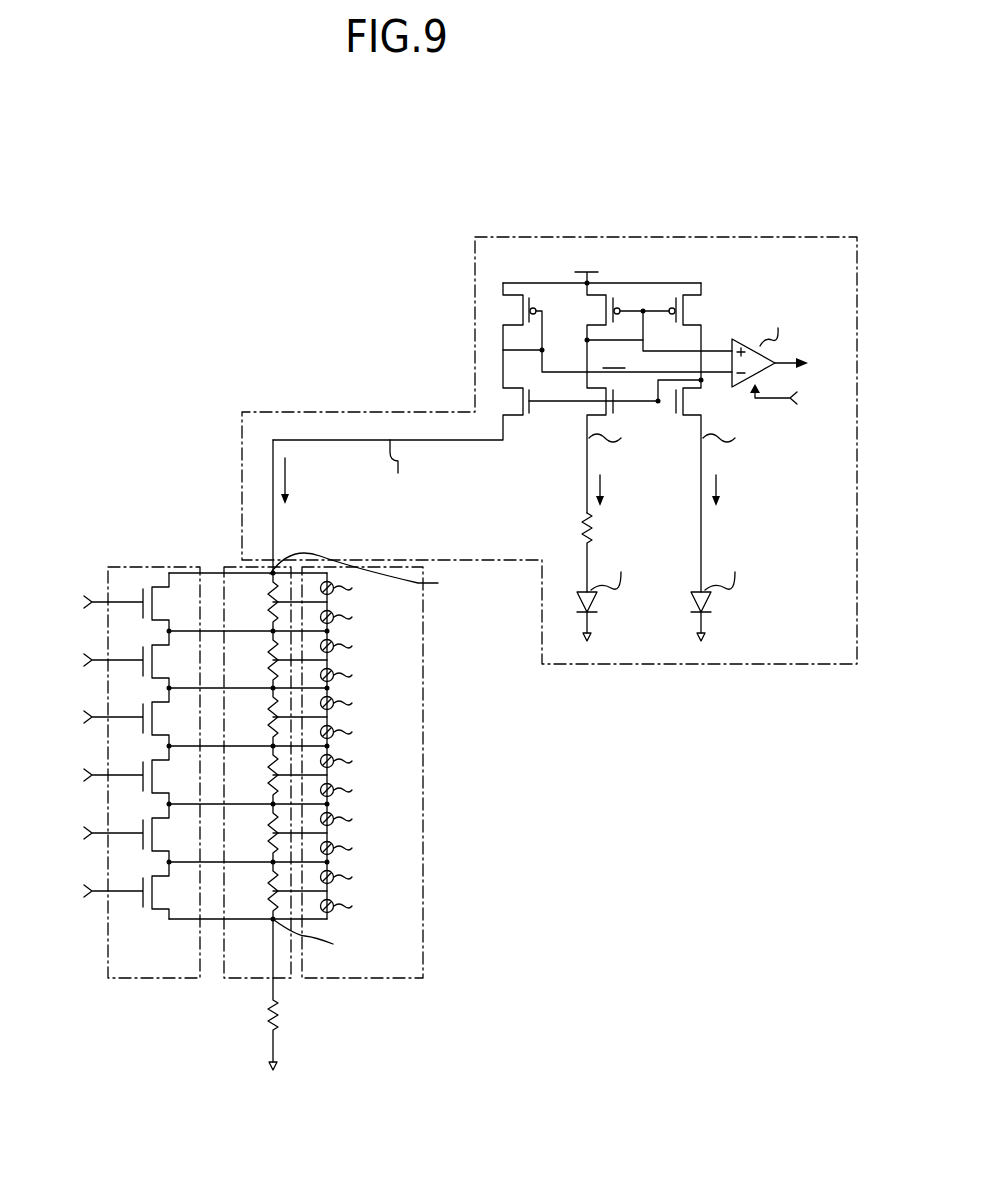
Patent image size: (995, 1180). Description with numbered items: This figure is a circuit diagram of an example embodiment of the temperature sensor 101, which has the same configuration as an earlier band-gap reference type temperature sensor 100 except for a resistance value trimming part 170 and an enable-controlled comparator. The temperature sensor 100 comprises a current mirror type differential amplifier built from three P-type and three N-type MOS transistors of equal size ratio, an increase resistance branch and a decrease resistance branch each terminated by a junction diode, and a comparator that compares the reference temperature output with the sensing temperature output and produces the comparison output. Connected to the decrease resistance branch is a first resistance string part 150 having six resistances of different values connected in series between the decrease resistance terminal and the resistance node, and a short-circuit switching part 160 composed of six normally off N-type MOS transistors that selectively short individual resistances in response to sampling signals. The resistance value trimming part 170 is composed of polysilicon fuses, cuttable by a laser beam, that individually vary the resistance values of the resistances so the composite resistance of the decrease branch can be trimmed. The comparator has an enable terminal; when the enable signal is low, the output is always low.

The temperature sensor 101 is at (266, 224).
The temperature sensor 100 is at (472, 340).
The short-circuit switching part 160 is at (147, 558).
The first resistance string part 150 is at (241, 988).
The resistance value trimming part 170 is at (424, 812).